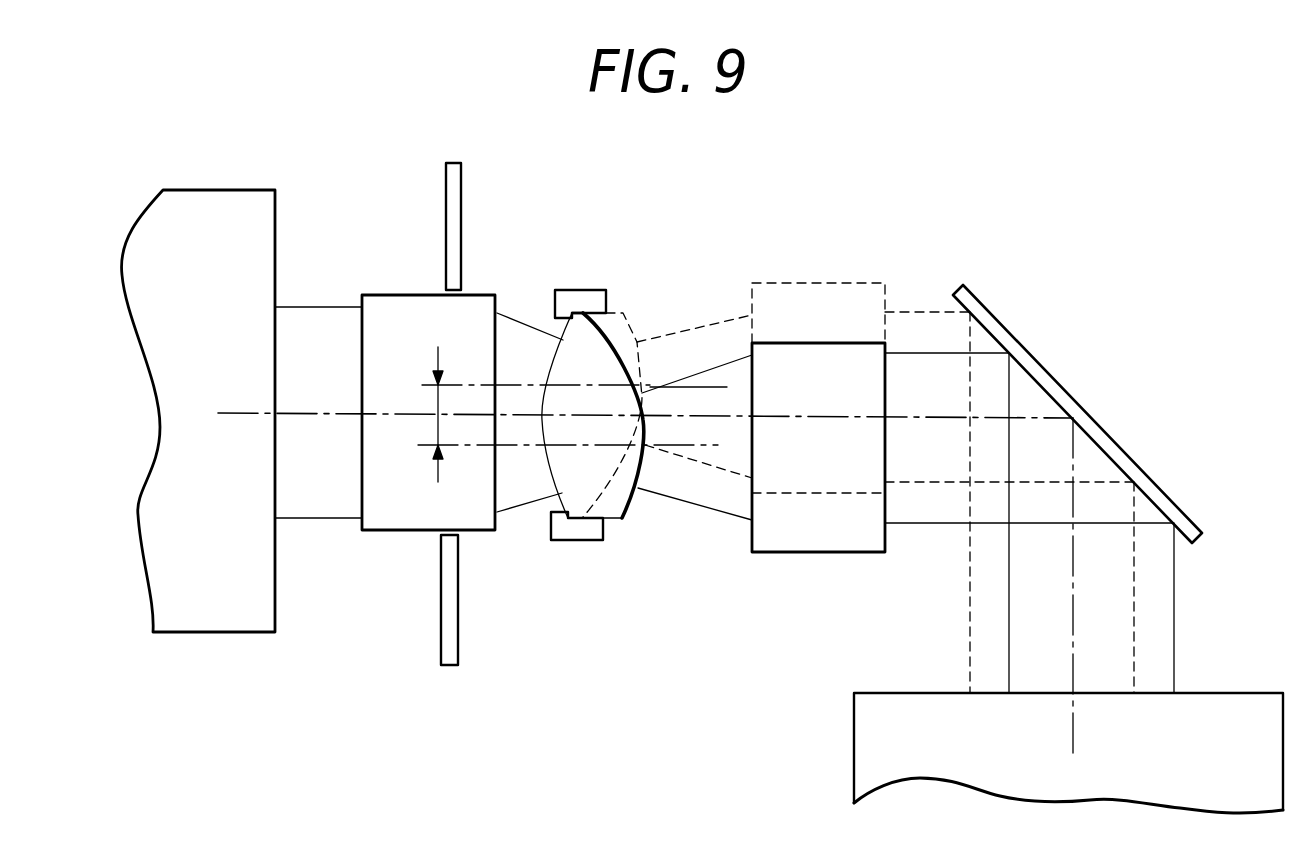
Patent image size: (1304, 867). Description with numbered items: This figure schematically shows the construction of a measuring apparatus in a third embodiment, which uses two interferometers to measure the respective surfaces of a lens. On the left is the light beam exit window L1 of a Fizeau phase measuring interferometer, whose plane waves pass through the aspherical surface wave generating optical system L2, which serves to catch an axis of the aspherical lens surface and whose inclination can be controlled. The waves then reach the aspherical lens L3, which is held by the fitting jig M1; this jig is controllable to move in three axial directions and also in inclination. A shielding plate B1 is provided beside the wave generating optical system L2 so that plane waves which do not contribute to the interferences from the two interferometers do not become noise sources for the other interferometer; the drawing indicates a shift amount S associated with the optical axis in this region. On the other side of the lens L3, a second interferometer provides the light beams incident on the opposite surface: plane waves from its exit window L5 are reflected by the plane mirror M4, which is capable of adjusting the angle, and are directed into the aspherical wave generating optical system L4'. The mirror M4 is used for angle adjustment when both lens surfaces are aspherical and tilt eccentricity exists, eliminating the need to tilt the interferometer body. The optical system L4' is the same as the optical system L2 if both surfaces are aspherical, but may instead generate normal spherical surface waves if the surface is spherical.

The light beam exit window L1 is at (220, 620).
The aspherical surface wave generating optical system L2 is at (410, 518).
The shielding plate B1 is at (462, 172).
The shift amount S is at (561, 414).
The fitting jig M1 is at (577, 300).
The aspherical lens L3 is at (614, 510).
The aspherical wave generating optical system L4' is at (818, 453).
The plane mirror M4 is at (988, 322).
The exit window L5 is at (858, 758).